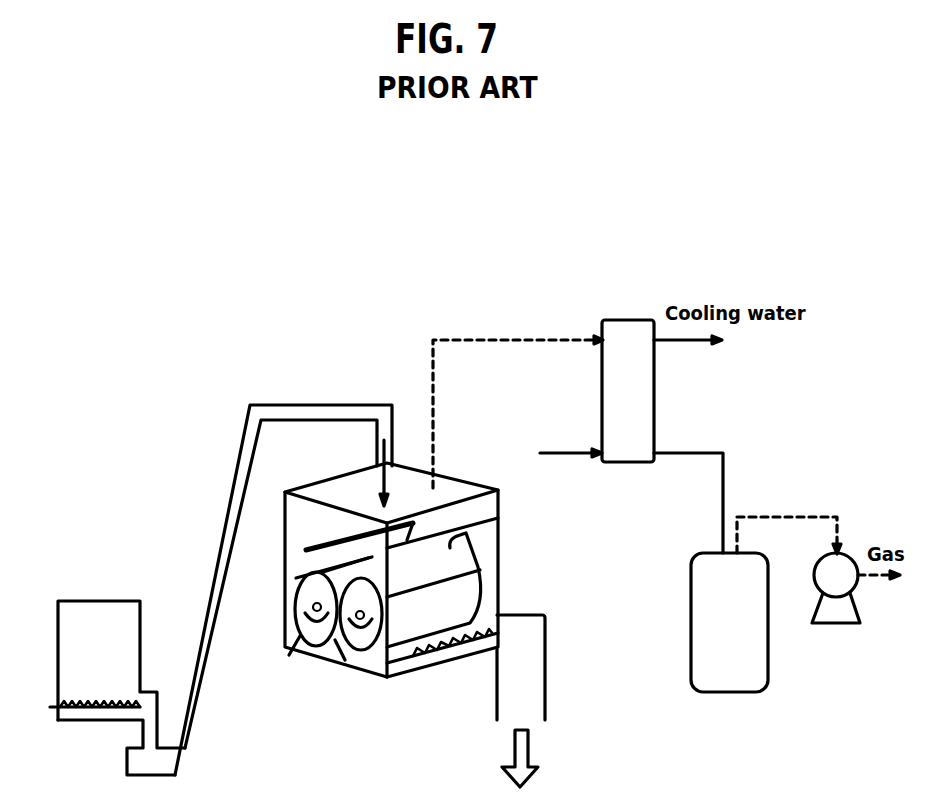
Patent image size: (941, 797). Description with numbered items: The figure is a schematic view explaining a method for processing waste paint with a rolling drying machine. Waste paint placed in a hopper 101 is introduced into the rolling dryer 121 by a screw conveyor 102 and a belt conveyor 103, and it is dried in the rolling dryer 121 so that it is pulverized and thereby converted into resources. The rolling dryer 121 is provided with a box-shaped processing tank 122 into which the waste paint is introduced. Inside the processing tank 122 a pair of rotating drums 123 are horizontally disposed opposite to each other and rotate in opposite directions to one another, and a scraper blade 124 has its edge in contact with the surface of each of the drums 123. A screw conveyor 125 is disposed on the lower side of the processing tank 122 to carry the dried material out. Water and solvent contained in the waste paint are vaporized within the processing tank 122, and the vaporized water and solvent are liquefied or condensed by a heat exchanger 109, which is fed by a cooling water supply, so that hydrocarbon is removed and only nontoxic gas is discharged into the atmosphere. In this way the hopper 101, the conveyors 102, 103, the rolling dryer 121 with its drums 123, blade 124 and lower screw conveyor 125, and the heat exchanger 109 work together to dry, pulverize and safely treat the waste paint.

The hopper 101 is at (102, 610).
The screw conveyor 102 is at (83, 718).
The belt conveyor 103 is at (203, 608).
The heat exchanger 109 is at (625, 318).
The rolling dryer 121 is at (324, 687).
The processing tank 122 is at (502, 532).
The rotating drums 123 is at (305, 635).
The scraper blade 124 is at (333, 548).
The screw conveyor 125 is at (443, 660).